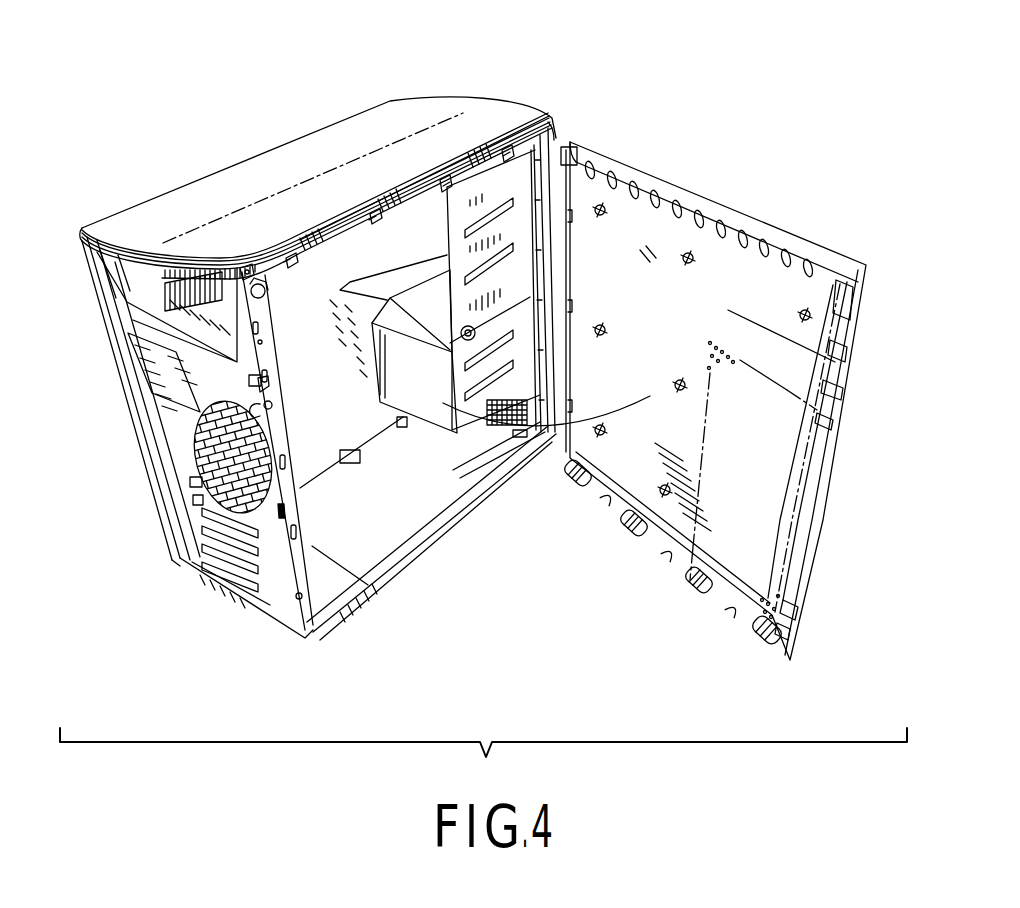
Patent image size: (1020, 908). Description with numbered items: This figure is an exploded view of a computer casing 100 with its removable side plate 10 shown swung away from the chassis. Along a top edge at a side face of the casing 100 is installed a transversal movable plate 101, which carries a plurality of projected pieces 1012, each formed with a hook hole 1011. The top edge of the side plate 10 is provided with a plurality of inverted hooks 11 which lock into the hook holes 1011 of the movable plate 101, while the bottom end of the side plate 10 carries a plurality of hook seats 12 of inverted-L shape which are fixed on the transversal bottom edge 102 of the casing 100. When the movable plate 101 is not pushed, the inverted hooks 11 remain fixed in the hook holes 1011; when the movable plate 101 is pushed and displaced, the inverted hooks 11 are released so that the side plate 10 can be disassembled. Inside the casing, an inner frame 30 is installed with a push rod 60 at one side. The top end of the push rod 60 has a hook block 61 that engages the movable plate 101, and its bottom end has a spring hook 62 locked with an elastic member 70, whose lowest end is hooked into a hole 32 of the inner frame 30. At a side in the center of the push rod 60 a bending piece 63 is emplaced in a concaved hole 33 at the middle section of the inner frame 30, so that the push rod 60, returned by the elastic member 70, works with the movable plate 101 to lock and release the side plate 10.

The casing of computer 100 is at (130, 195).
The movable plate 101 is at (323, 240).
The hook holes 1011 is at (553, 133).
The projected pieces 1012 is at (575, 137).
The transversal bottom edge 102 is at (380, 570).
The side plate 10 is at (673, 331).
The inverted hooks 11 is at (807, 265).
The hook seats 12 is at (766, 630).
The inner frame 30 is at (197, 365).
The hole 32 is at (280, 511).
The concaved hole 33 is at (252, 380).
The push rod 60 is at (265, 292).
The hook block 61 is at (245, 270).
The spring hook 62 is at (249, 412).
The bending piece 63 is at (262, 380).
The elastic member 70 is at (203, 447).